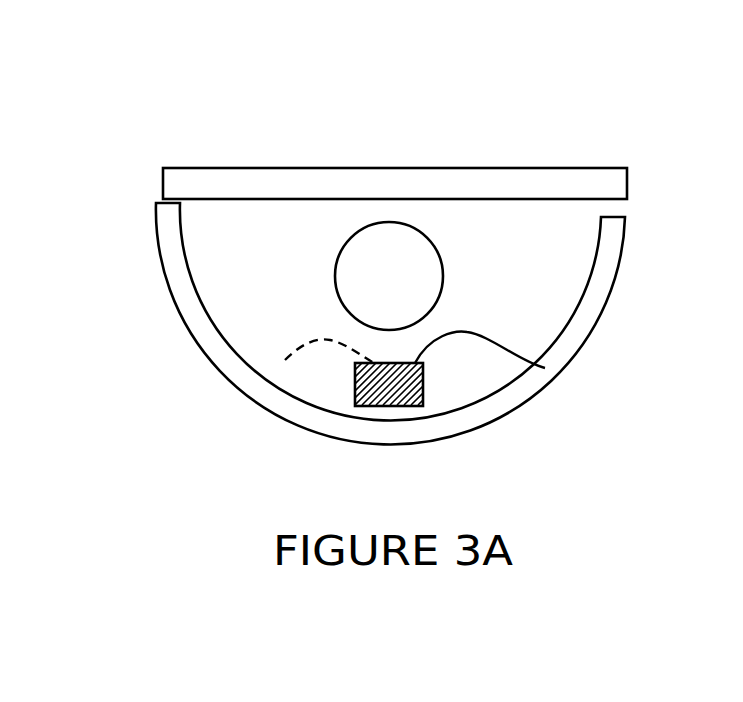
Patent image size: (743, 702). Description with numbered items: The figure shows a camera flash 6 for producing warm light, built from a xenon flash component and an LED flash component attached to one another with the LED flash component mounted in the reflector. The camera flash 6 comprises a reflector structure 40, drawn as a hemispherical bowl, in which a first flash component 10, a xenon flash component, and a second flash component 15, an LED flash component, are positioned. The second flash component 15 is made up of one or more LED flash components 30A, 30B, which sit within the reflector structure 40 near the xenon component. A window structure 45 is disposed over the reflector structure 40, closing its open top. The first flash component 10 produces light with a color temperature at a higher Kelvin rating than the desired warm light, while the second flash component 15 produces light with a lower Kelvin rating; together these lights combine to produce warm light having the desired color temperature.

The camera flash 6 is at (464, 132).
The first flash component 10 is at (387, 251).
The second flash component 15 is at (363, 392).
The LED flash component 30A is at (545, 368).
The LED flash component 30B is at (285, 360).
The reflector structure 40 is at (608, 255).
The window structure 45 is at (575, 175).